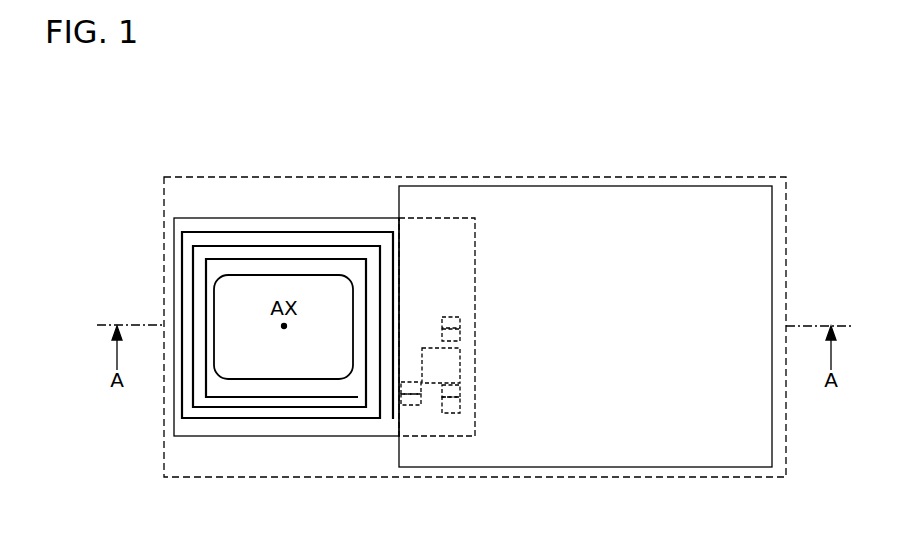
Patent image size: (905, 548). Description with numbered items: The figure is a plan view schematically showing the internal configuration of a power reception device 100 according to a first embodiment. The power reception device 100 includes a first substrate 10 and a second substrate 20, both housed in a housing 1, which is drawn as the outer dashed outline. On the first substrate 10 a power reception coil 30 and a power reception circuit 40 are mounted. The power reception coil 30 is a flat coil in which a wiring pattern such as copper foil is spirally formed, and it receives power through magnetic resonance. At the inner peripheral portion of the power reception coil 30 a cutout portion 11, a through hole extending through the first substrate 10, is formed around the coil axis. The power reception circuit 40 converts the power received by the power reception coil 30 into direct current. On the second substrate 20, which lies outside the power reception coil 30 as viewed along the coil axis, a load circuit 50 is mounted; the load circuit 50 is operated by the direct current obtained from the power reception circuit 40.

The housing 1 is at (709, 477).
The power reception device 100 is at (671, 155).
The first substrate 10 is at (203, 436).
The cutout portion 11 is at (291, 348).
The second substrate 20 is at (577, 467).
The power reception coil 30 is at (253, 397).
The power reception circuit 40 is at (452, 413).
The load circuit 50 is at (651, 440).